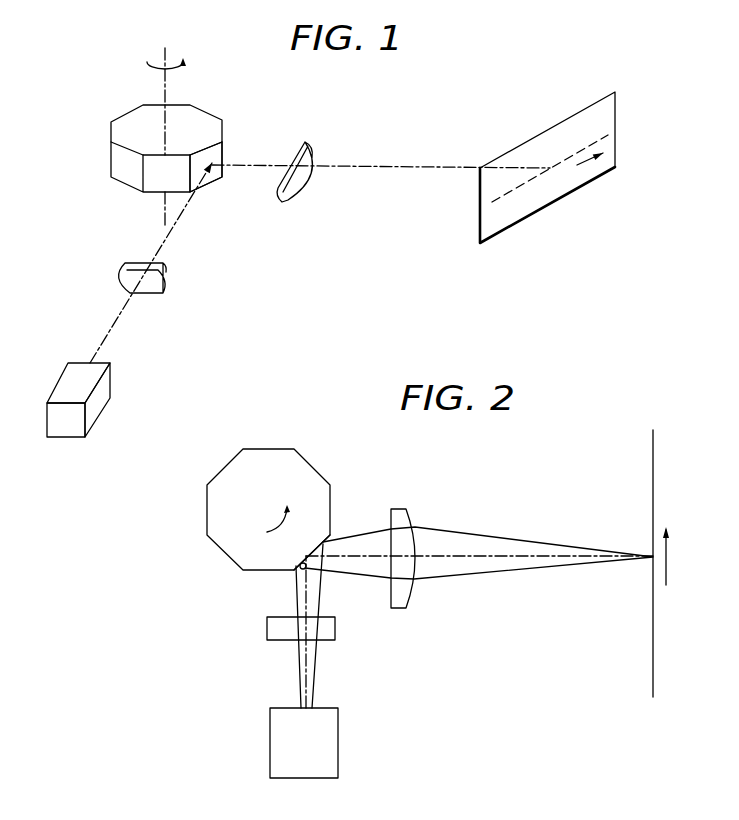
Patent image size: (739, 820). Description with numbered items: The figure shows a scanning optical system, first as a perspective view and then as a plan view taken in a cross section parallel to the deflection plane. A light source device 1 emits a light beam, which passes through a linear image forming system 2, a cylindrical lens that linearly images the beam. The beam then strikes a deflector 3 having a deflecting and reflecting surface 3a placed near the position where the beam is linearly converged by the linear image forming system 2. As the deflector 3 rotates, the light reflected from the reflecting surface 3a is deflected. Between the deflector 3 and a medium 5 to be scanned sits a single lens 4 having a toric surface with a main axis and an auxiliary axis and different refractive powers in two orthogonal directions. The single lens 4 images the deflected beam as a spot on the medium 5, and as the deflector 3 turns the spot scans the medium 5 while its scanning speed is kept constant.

In FIG. 1, the light source device 1 is at (112, 382).
In FIG. 2, the light source device 1 is at (338, 728).
In FIG. 1, the linear image forming system 2 is at (167, 280).
In FIG. 2, the linear image forming system 2 is at (335, 628).
In FIG. 1, the deflector 3 is at (203, 117).
In FIG. 2, the deflector 3 is at (272, 458).
In FIG. 1, the deflecting and reflecting surface 3a is at (210, 176).
In FIG. 2, the deflecting and reflecting surface 3a is at (303, 569).
In FIG. 1, the single lens 4 is at (313, 151).
In FIG. 2, the single lens 4 is at (398, 514).
In FIG. 1, the medium to be scanned 5 is at (578, 118).
In FIG. 2, the medium to be scanned 5 is at (653, 455).